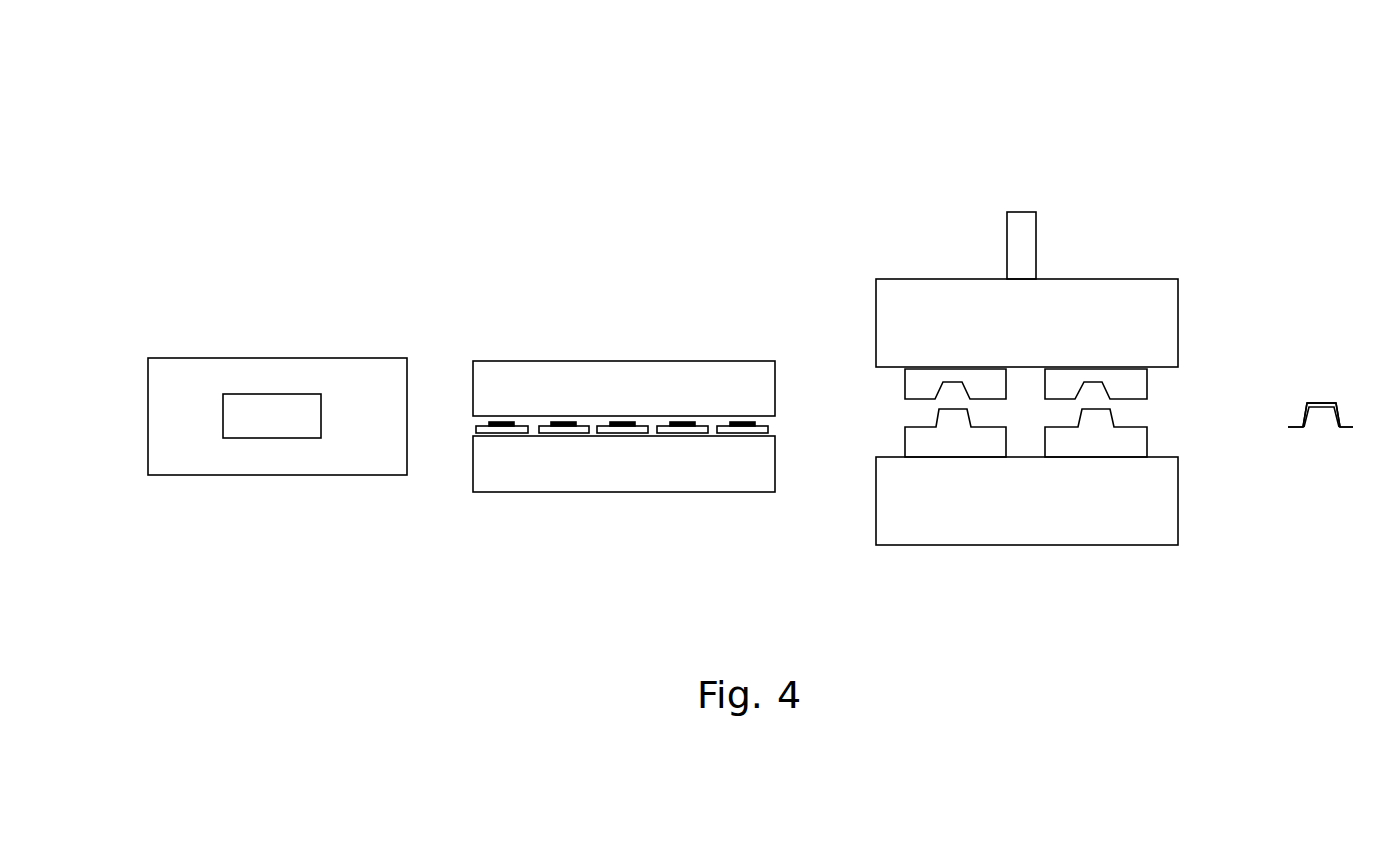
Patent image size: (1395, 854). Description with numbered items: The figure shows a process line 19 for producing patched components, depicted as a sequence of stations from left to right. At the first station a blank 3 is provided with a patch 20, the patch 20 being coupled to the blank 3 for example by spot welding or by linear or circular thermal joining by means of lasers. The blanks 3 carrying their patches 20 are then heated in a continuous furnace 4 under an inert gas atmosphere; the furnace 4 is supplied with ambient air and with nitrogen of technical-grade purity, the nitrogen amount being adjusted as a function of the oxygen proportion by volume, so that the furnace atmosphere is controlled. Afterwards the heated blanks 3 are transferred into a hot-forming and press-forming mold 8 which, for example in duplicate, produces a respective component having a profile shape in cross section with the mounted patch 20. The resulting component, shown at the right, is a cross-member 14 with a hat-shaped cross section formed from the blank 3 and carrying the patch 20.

The blank 3 is at (198, 358).
The continuous furnace 4 is at (655, 350).
The hot-forming and press-forming mold 8 is at (904, 270).
The cross-member 14 is at (1292, 384).
The manufacturing process 19 is at (516, 158).
The patch 20 is at (252, 429).